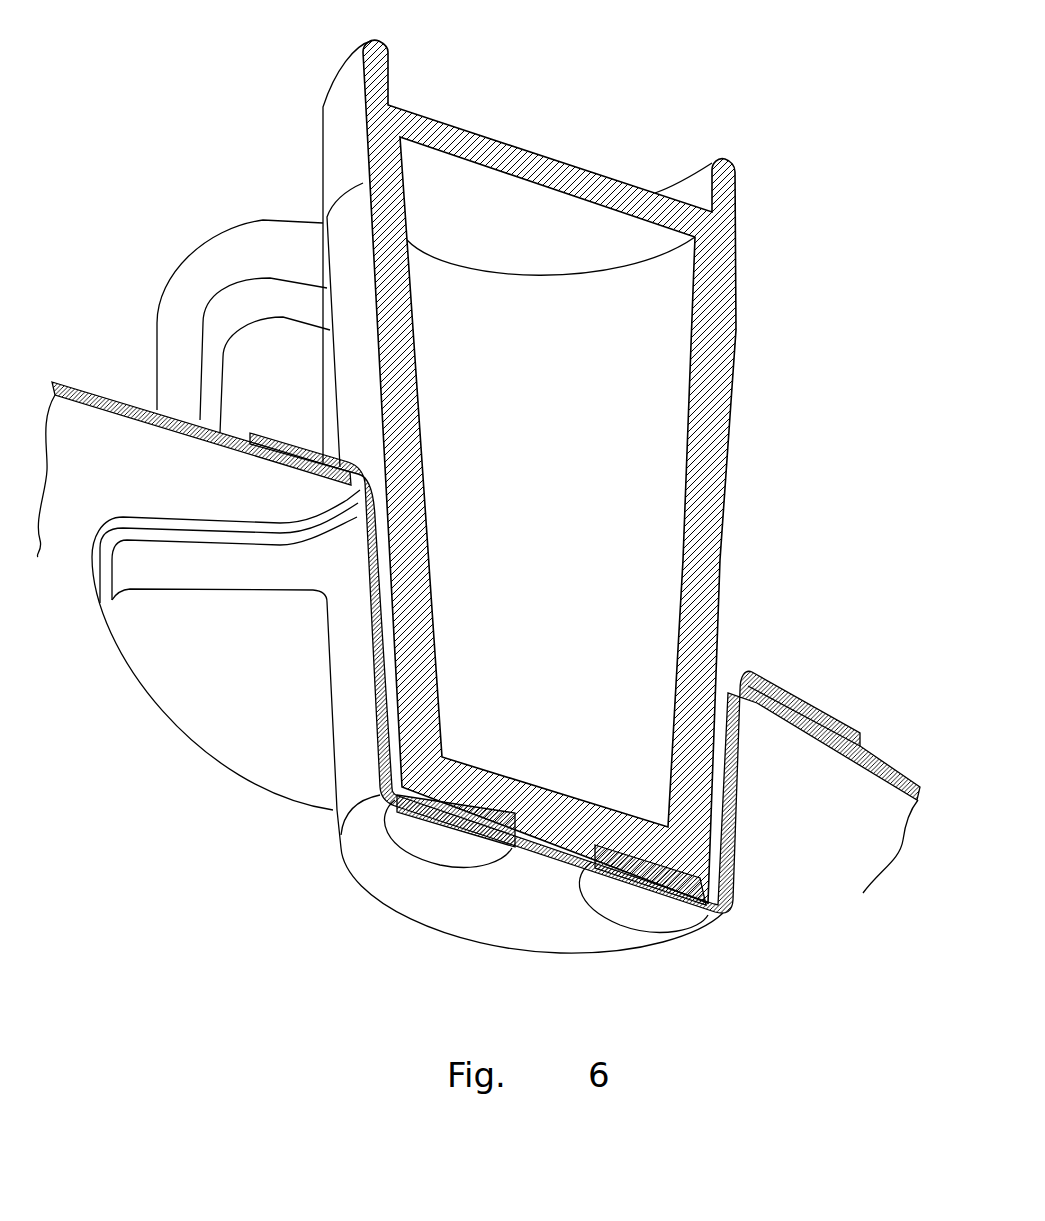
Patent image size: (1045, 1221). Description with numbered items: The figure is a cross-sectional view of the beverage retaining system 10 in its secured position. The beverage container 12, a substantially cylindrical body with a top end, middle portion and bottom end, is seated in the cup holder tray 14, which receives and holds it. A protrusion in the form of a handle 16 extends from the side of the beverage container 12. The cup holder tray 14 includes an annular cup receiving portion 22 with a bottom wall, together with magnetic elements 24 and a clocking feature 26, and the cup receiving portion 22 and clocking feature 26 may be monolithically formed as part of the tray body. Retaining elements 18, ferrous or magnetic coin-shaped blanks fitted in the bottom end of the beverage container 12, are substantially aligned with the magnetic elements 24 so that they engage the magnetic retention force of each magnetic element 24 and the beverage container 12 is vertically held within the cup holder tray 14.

The beverage retaining system 10 is at (777, 161).
The beverage container 12 is at (722, 337).
The cup holder tray 14 is at (773, 680).
The handle 16 is at (210, 267).
The retaining elements 18 is at (627, 847).
The cup receiving portion 22 is at (358, 744).
The magnetic elements 24 is at (450, 853).
The clocking feature 26 is at (142, 615).